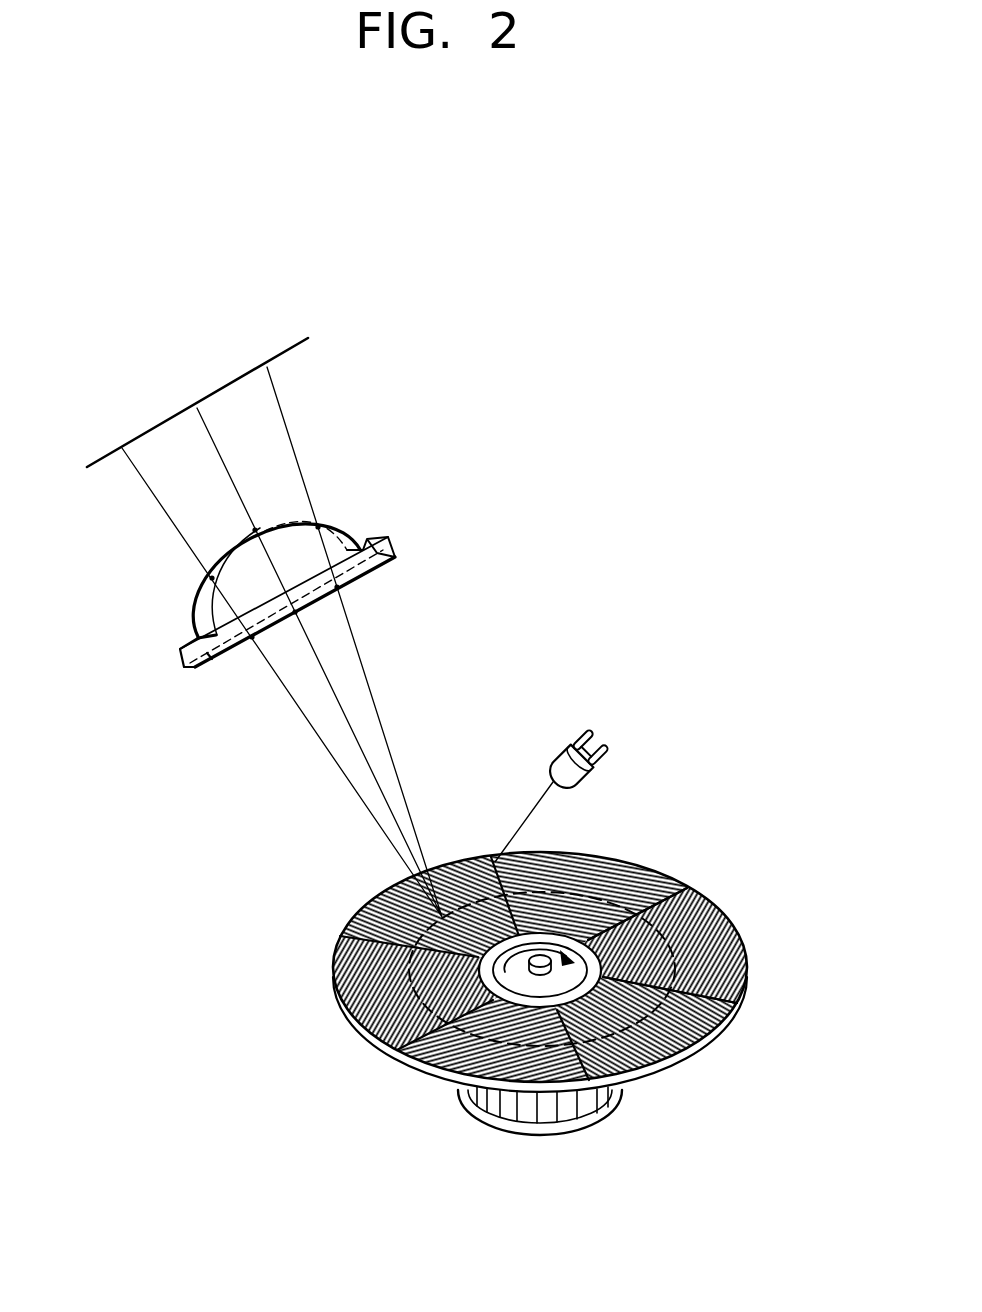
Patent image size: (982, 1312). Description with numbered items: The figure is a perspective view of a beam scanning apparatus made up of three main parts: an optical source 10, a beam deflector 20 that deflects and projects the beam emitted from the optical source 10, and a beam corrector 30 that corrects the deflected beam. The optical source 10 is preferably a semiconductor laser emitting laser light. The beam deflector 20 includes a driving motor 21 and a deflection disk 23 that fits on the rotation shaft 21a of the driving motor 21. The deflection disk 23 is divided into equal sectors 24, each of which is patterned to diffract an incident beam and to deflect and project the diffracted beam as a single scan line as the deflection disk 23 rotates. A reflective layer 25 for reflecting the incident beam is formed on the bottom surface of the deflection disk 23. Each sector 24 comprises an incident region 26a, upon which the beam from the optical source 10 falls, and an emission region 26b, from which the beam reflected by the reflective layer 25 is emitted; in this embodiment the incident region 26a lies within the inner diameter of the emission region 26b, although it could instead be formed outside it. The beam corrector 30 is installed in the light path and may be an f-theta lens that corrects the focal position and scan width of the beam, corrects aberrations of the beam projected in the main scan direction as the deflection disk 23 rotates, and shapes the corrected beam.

The optical source 10 is at (600, 737).
The beam deflector 20 is at (302, 941).
The driving motor 21 is at (527, 1110).
The rotation shaft 21a is at (553, 970).
The deflection disk 23 is at (708, 1050).
The sectors 24 is at (703, 927).
The reflective layer 25 is at (363, 1043).
The incident region 26a is at (620, 893).
The emission region 26b is at (657, 880).
The beam corrector 30 is at (168, 598).